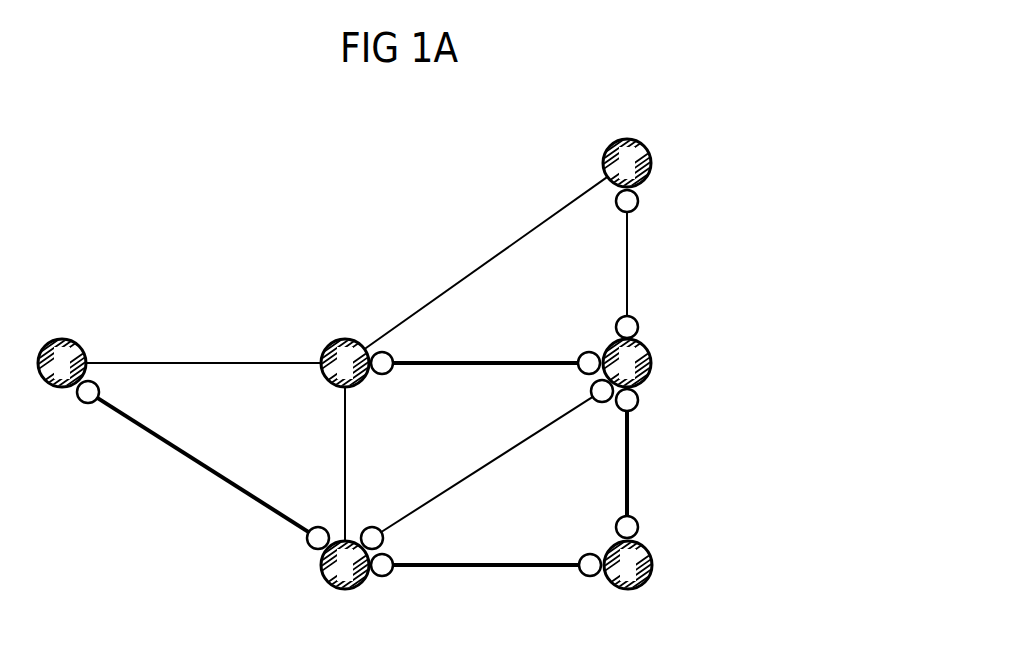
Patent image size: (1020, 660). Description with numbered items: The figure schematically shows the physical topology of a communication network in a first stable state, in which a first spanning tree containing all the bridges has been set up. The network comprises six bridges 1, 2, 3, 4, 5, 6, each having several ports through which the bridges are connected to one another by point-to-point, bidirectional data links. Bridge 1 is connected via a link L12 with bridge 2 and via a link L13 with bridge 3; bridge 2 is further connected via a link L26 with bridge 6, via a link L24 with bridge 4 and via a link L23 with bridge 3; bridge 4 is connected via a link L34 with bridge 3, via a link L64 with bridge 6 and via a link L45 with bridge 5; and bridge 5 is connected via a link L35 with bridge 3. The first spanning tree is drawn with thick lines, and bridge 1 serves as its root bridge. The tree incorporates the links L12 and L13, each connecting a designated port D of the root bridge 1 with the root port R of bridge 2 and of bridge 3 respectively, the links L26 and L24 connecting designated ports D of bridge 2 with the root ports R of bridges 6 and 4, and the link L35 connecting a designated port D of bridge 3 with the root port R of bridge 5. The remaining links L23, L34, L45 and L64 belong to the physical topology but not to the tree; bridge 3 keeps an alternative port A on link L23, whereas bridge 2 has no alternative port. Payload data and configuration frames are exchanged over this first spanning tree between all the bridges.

The bridge 1 is at (621, 558).
The bridge 2 is at (620, 363).
The bridge 3 is at (350, 563).
The bridge 4 is at (351, 363).
The bridge 5 is at (63, 365).
The bridge 6 is at (627, 170).
The link L12 is at (628, 462).
The link L13 is at (485, 567).
The link L23 is at (483, 462).
The link L24 is at (485, 362).
The link L26 is at (627, 263).
The link L34 is at (345, 433).
The link L35 is at (204, 466).
The link L45 is at (203, 363).
The link L64 is at (484, 260).